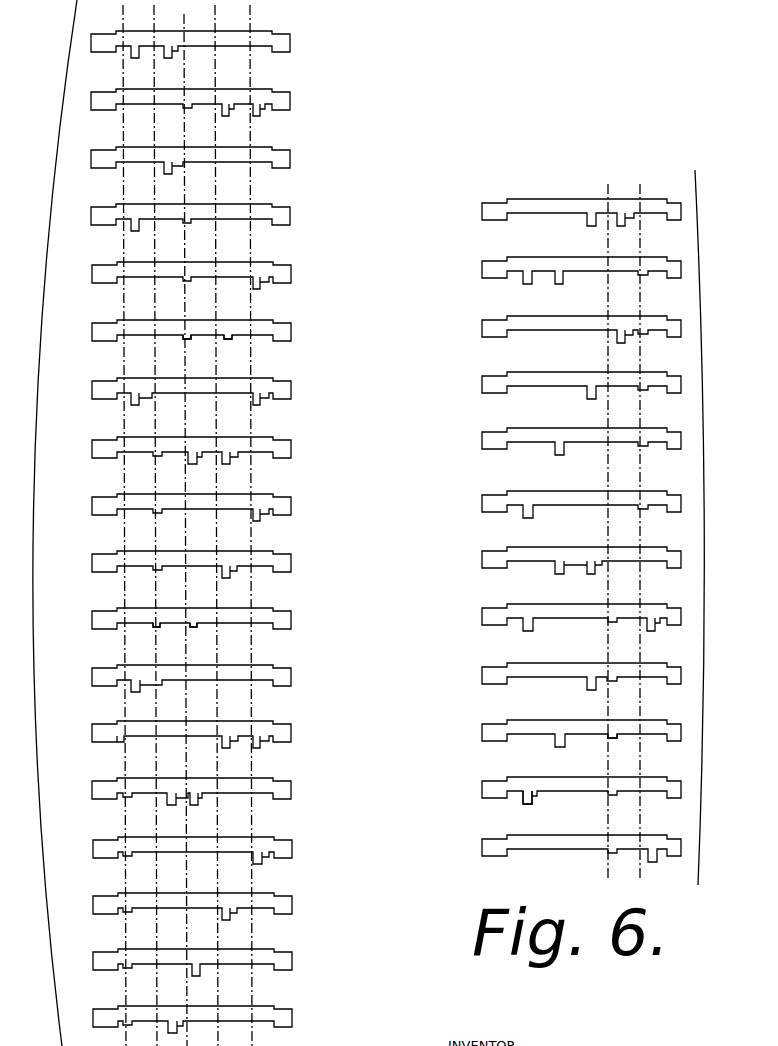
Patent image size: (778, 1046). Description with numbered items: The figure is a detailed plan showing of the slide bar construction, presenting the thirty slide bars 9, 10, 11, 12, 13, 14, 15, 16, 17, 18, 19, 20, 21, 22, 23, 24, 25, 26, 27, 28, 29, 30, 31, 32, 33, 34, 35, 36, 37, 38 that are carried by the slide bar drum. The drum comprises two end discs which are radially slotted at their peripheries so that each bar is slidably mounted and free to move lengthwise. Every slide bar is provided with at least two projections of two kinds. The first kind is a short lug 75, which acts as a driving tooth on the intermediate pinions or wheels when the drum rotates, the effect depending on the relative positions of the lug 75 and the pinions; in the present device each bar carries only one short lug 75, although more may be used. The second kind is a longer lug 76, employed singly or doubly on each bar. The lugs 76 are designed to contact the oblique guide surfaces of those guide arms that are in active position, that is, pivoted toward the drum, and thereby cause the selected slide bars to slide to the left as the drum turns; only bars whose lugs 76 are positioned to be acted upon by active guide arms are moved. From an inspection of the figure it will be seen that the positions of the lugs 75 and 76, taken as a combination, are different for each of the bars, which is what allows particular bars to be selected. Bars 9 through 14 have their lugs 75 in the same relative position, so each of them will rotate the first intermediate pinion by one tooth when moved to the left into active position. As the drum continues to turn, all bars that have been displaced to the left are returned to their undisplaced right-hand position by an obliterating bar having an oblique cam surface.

The slide bar 9 is at (293, 1017).
The slide bar 10 is at (293, 960).
The slide bar 11 is at (293, 904).
The slide bar 12 is at (293, 848).
The slide bar 13 is at (292, 789).
The slide bar 14 is at (292, 732).
The slide bar 15 is at (292, 676).
The slide bar 16 is at (292, 619).
The slide bar 17 is at (292, 562).
The slide bar 18 is at (292, 505).
The slide bar 19 is at (292, 448).
The slide bar 20 is at (292, 389).
The slide bar 21 is at (292, 331).
The slide bar 22 is at (292, 273).
The slide bar 23 is at (291, 215).
The slide bar 24 is at (291, 158).
The slide bar 25 is at (291, 100).
The slide bar 26 is at (291, 42).
The slide bar 27 is at (482, 845).
The slide bar 28 is at (482, 787).
The slide bar 29 is at (482, 730).
The slide bar 30 is at (482, 673).
The slide bar 31 is at (482, 614).
The slide bar 32 is at (482, 557).
The slide bar 33 is at (482, 501).
The slide bar 34 is at (482, 438).
The slide bar 35 is at (482, 382).
The slide bar 36 is at (482, 326).
The slide bar 37 is at (482, 267).
The slide bar 38 is at (482, 209).
The lug 75 is at (189, 339).
The lug 76 is at (232, 341).